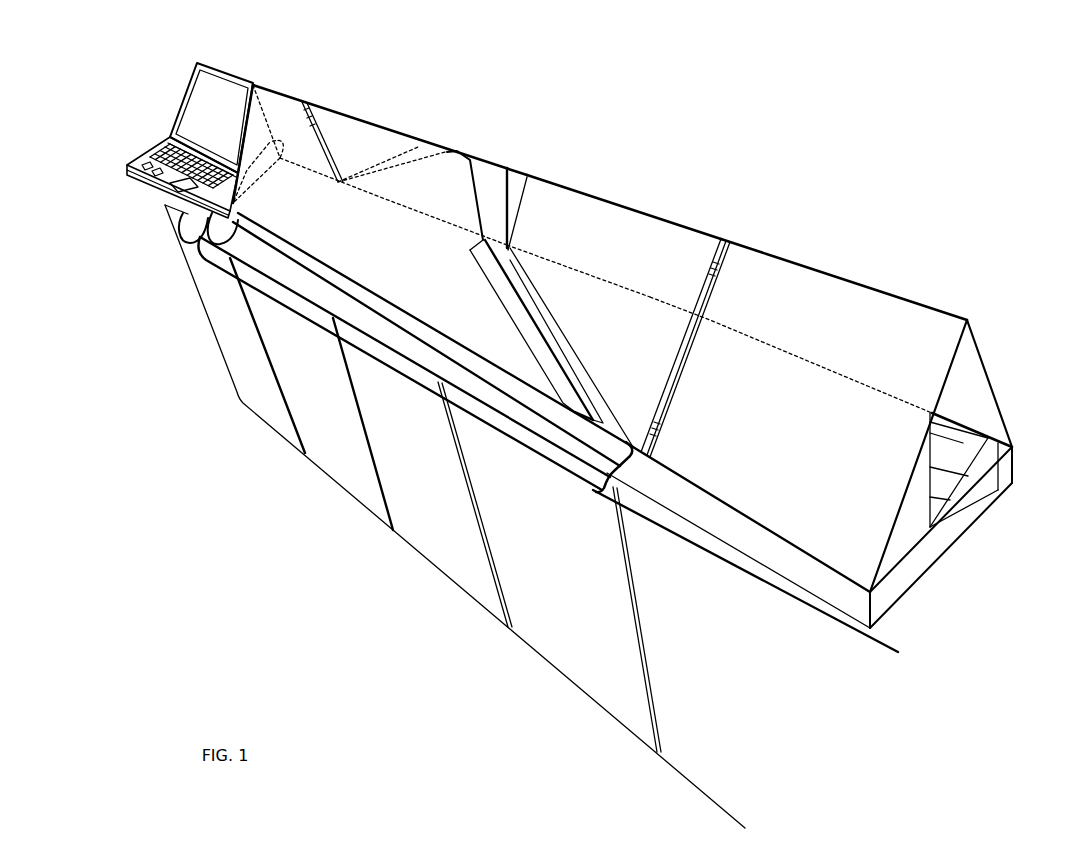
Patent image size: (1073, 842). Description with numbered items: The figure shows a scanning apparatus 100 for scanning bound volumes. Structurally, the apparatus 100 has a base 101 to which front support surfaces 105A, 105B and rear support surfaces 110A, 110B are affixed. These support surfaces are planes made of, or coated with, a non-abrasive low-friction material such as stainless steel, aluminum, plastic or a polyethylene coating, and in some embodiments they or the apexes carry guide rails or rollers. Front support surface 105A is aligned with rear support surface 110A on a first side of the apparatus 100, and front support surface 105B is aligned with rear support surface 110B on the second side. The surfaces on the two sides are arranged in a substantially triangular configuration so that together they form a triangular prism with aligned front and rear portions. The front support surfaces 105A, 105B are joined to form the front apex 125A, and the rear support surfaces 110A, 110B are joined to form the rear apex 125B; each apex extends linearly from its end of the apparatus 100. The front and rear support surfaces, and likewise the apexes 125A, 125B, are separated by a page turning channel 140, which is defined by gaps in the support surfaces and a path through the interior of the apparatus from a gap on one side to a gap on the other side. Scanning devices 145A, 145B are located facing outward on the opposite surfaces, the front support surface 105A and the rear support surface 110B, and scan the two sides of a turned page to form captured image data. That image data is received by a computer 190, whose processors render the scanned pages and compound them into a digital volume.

The scanning apparatus 100 is at (703, 78).
The base 101 is at (745, 537).
The front support surface 105A is at (855, 320).
The front support surface 105B is at (970, 385).
The rear support surface 110A is at (430, 280).
The rear support surface 110B is at (342, 140).
The apex 125A is at (645, 212).
The apex 125B is at (412, 138).
The page turning channel 140 is at (492, 208).
The scanning device 145A is at (673, 385).
The scanning device 145B is at (313, 103).
The computer 190 is at (211, 102).